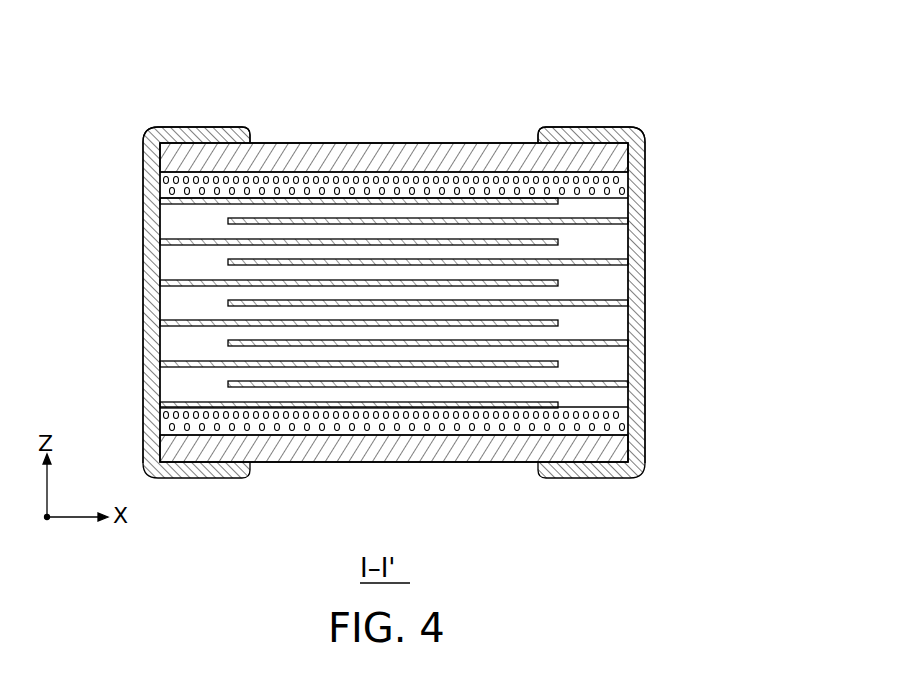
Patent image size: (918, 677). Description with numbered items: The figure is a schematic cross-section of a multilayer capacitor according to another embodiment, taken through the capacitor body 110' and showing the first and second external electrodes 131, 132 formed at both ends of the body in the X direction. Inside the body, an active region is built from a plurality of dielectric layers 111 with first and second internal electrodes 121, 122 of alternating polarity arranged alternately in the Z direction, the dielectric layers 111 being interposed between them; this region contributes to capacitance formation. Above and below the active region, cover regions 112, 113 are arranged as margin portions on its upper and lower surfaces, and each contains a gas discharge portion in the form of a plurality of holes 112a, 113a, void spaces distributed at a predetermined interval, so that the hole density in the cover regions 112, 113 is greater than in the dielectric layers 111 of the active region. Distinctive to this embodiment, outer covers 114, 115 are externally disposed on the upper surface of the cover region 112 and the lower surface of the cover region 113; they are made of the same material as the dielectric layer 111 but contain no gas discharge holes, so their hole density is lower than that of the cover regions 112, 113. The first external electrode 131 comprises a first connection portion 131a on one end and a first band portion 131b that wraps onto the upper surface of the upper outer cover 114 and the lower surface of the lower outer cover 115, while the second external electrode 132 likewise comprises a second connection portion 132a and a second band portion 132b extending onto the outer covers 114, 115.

The capacitor body 110' is at (394, 253).
The dielectric layer 111 is at (177, 262).
The cover region 112 is at (398, 208).
The holes 112a is at (285, 180).
The cover region 113 is at (468, 430).
The holes 113a is at (328, 427).
The outer cover 114 is at (347, 143).
The outer cover 115 is at (395, 452).
The first internal electrode 121 is at (320, 200).
The second internal electrode 122 is at (497, 220).
The first external electrode 131 is at (50, 140).
The first connection portion 131a is at (143, 208).
The first band portion 131b is at (197, 130).
The second external electrode 132 is at (738, 140).
The second connection portion 132a is at (645, 208).
The second band portion 132b is at (591, 130).